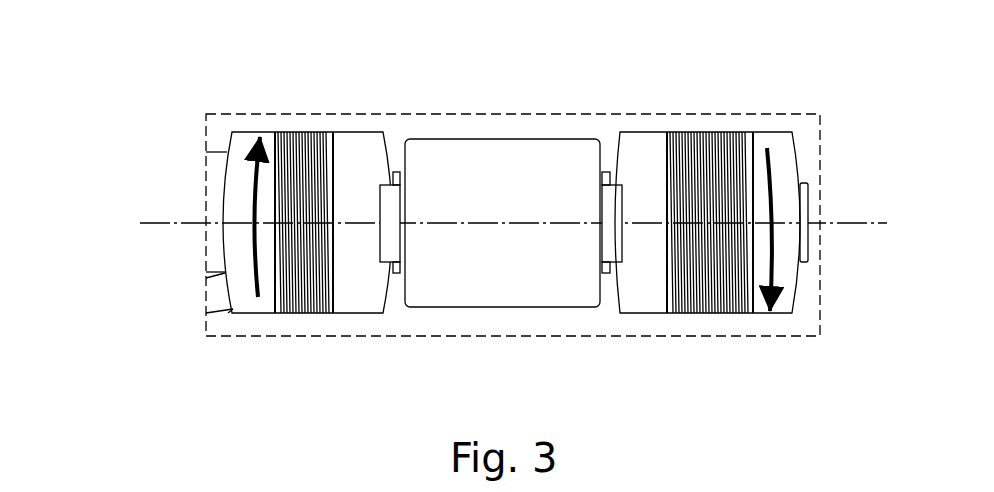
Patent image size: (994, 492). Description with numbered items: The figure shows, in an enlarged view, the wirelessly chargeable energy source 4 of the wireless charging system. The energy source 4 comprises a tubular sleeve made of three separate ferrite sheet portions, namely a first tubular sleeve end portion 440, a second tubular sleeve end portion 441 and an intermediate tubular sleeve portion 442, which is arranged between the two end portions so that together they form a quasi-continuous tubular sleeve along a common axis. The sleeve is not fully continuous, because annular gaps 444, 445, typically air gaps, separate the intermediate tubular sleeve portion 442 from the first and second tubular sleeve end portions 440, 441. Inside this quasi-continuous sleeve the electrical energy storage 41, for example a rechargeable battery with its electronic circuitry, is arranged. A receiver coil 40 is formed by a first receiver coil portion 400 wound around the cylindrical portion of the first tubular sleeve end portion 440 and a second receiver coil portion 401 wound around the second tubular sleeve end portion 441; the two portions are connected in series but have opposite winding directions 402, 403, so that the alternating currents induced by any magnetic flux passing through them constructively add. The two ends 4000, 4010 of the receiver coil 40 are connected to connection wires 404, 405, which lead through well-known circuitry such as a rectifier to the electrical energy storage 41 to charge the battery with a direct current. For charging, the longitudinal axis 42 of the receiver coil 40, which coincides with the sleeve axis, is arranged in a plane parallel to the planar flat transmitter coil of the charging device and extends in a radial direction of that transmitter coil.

The wirelessly chargeable energy source 4 is at (150, 197).
The receiver coil 40 is at (677, 55).
The electrical energy storage 41 is at (398, 273).
The longitudinal axis of the receiver coil 42 is at (842, 226).
The first receiver coil portion 400 is at (300, 163).
The second receiver coil portion 401 is at (708, 162).
The winding direction 402 is at (247, 165).
The winding direction 403 is at (772, 170).
The connection wire 404 is at (225, 272).
The connection wire 405 is at (206, 278).
The first tubular sleeve end portion 440 is at (248, 253).
The second tubular sleeve end portion 441 is at (732, 239).
The intermediate tubular sleeve portion 442 is at (500, 254).
The annular gap 444 is at (395, 136).
The annular gap 445 is at (603, 135).
The end of the receiver coil 4000 is at (213, 318).
The end of the receiver coil 4010 is at (231, 328).